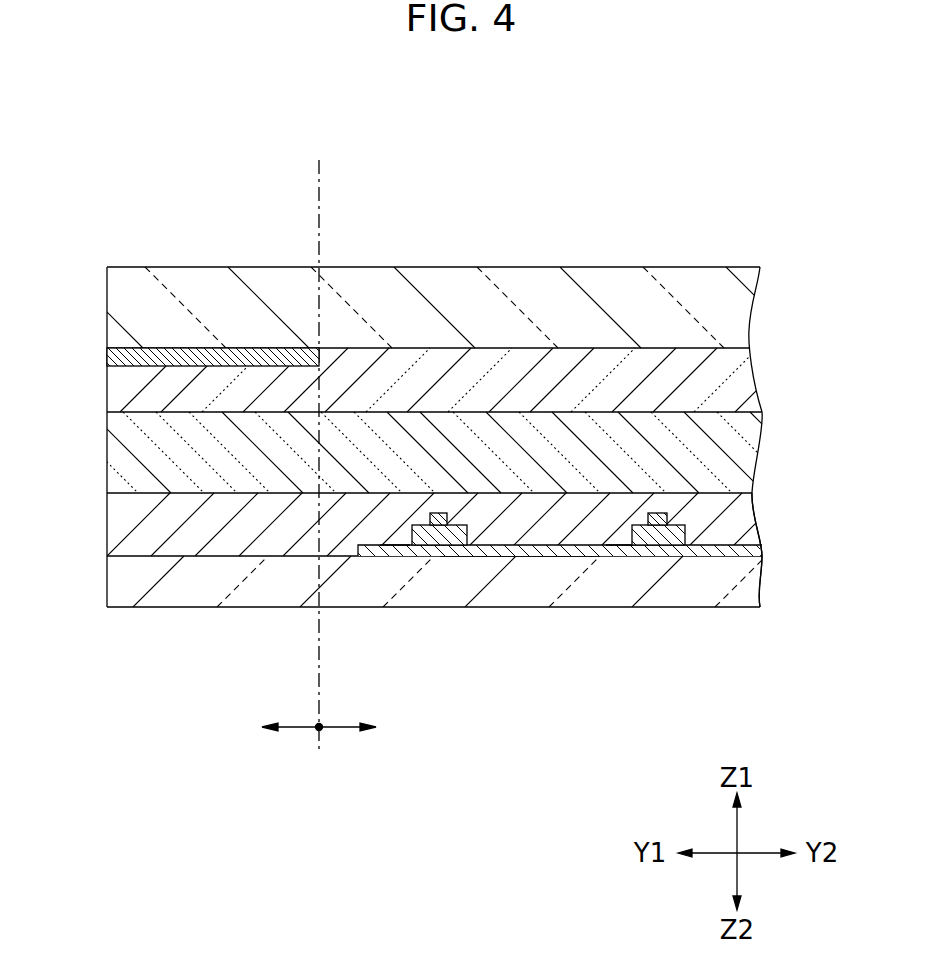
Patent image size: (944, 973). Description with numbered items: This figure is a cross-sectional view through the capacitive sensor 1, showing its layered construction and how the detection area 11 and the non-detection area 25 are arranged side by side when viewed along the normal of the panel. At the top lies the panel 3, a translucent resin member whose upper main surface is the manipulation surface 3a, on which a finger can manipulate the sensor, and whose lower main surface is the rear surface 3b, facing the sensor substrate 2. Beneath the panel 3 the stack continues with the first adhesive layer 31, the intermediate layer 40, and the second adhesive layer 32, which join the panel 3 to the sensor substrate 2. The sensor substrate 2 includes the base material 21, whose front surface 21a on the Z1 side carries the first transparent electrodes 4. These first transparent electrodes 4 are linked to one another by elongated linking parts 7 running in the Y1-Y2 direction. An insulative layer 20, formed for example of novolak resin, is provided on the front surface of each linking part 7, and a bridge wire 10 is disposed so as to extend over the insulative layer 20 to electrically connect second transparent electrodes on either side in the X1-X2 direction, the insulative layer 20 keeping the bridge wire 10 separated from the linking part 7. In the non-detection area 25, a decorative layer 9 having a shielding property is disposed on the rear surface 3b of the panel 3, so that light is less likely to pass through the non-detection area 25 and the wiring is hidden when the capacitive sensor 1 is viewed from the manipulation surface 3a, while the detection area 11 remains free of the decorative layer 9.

The capacitive sensor 1 is at (664, 149).
The sensor substrate 2 is at (792, 553).
The panel 3 is at (750, 290).
The manipulation surface 3a is at (568, 258).
The rear surface 3b is at (718, 362).
The first transparent electrode 4 is at (575, 557).
The linking part 7 is at (392, 548).
The decorative layer 9 is at (107, 357).
The bridge wire 10 is at (440, 513).
The detection area 11 is at (365, 727).
The insulative layer 20 is at (442, 546).
The base material 21 is at (740, 577).
The front surface 21a is at (510, 557).
The non-detection area 25 is at (272, 727).
The first adhesive layer 31 is at (748, 385).
The second adhesive layer 32 is at (748, 516).
The intermediate layer 40 is at (746, 450).